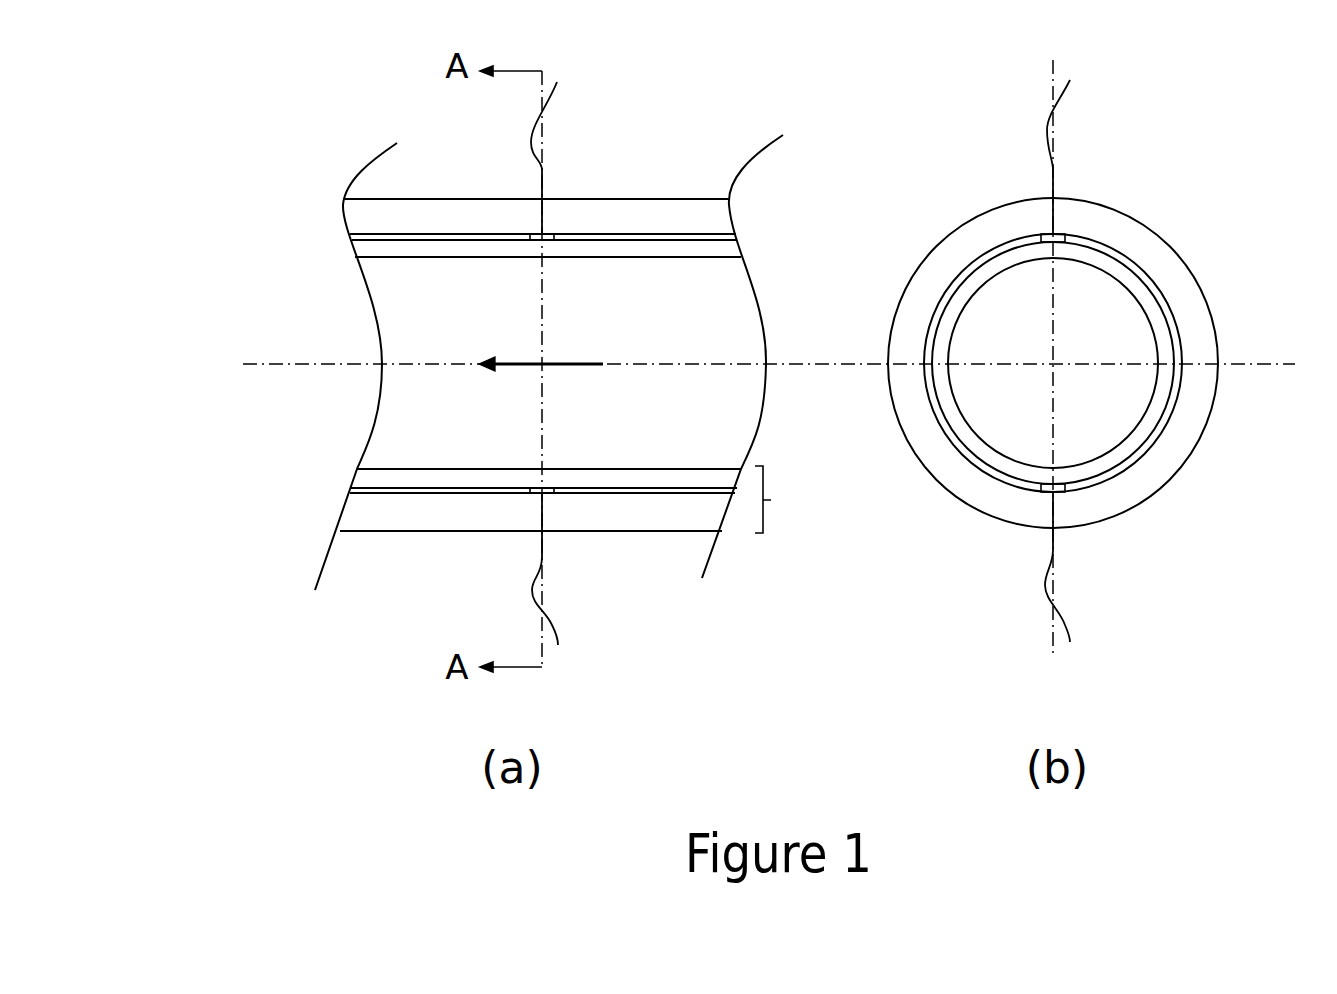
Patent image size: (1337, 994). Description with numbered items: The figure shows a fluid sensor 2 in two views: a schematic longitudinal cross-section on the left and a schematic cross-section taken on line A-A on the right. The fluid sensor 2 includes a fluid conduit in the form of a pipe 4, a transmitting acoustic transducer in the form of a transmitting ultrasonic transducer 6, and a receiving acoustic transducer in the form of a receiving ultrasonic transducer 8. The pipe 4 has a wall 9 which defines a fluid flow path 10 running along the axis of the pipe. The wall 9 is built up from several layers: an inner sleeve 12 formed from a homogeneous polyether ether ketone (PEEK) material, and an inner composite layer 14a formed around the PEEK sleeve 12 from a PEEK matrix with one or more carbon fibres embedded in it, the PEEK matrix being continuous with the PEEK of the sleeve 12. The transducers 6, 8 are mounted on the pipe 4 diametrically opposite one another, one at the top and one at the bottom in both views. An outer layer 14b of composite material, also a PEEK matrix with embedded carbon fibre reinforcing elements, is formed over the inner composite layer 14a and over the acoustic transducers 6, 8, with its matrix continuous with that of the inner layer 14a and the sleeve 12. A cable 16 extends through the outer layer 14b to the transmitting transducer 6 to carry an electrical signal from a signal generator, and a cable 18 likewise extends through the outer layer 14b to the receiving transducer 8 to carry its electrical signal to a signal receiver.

The fluid sensor 2 is at (362, 682).
The pipe 4 is at (320, 493).
The transmitting ultrasonic transducer 6 is at (548, 494).
The receiving ultrasonic transducer 8 is at (545, 234).
The wall 9 is at (776, 499).
The fluid flow path 10 is at (425, 428).
The inner sleeve 12 is at (370, 247).
The inner composite layer 14a is at (370, 241).
The outer layer of composite material 14b is at (368, 215).
The cable 16 is at (557, 629).
The cable 18 is at (553, 107).